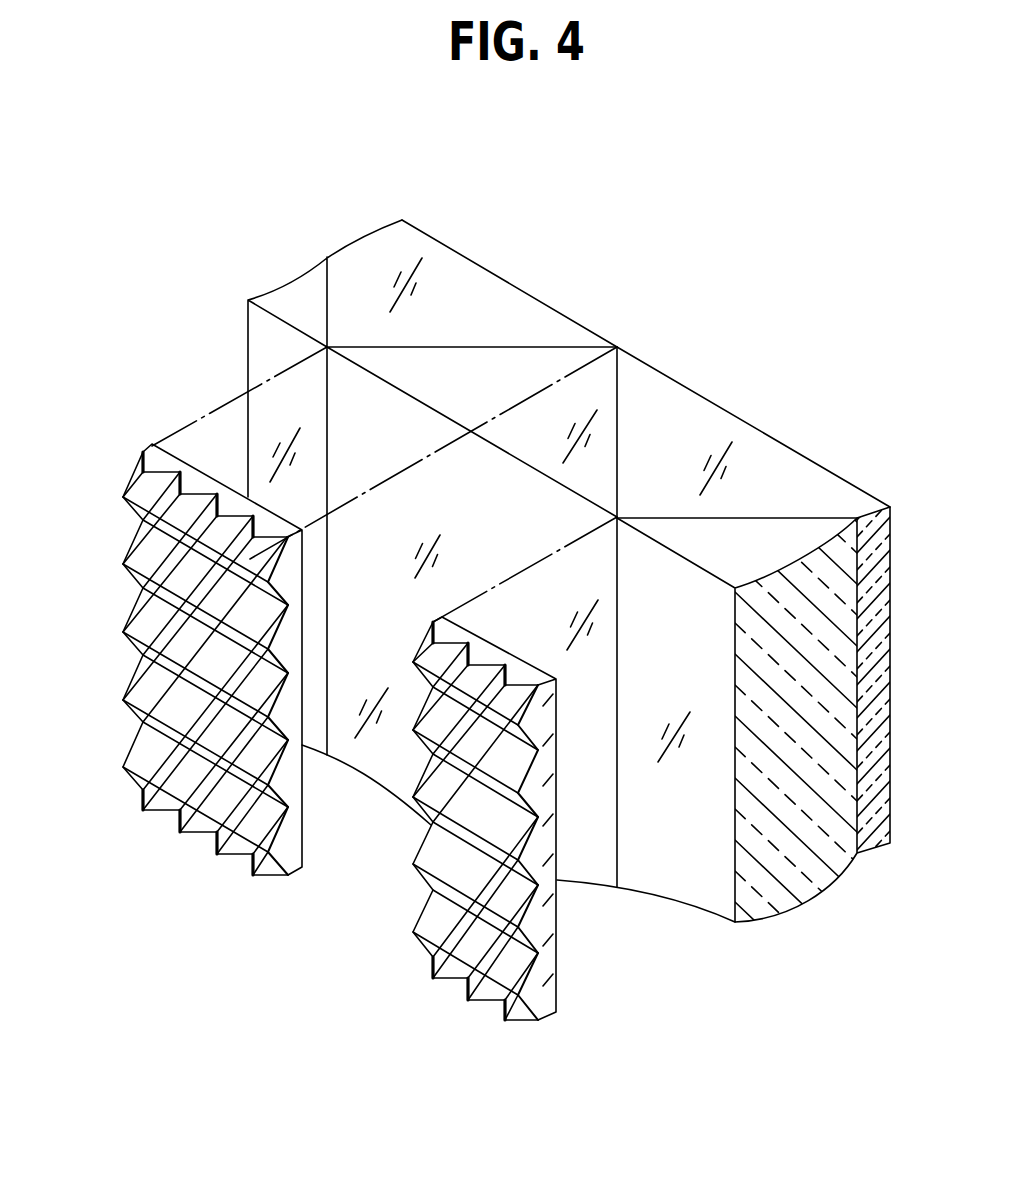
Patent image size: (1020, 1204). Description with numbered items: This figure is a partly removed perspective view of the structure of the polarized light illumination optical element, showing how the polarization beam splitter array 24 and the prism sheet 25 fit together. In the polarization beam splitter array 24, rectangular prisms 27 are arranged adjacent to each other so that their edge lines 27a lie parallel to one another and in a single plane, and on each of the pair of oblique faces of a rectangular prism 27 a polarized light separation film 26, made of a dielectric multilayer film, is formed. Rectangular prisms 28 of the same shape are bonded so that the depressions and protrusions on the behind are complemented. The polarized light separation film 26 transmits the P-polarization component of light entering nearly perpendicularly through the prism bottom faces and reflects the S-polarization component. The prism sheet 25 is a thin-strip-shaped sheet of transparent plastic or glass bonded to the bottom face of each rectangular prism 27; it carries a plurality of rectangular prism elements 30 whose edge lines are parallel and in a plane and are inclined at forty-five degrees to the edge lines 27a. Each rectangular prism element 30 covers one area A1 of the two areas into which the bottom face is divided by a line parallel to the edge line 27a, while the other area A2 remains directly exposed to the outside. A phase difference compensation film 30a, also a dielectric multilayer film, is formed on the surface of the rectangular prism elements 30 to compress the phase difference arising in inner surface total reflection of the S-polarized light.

The polarization beam splitter array 24 is at (296, 254).
The prism sheet 25 is at (111, 527).
The polarized light separation film 26 is at (453, 347).
The rectangular prism 27 is at (508, 358).
The edge line 27a is at (617, 347).
The rectangular prism 28 is at (790, 473).
The rectangular prism element 30 is at (220, 829).
The phase difference compensation film 30a is at (273, 598).
The area A1 is at (284, 373).
The area A2 is at (574, 541).